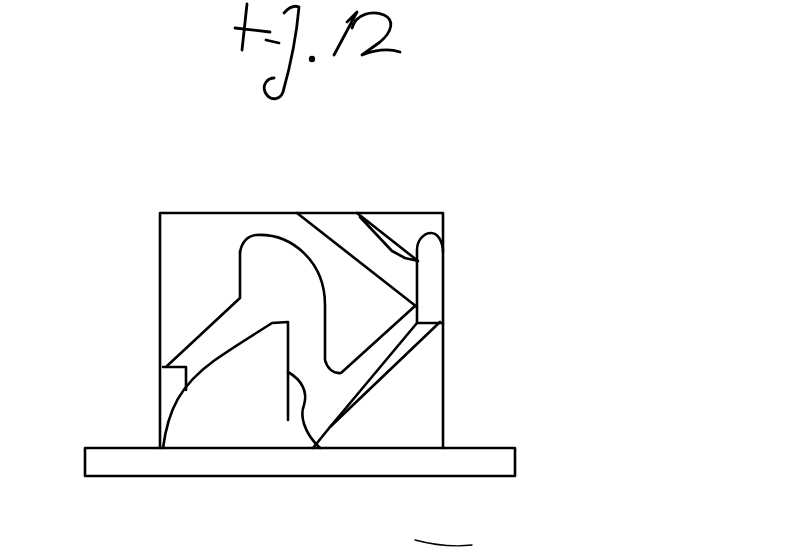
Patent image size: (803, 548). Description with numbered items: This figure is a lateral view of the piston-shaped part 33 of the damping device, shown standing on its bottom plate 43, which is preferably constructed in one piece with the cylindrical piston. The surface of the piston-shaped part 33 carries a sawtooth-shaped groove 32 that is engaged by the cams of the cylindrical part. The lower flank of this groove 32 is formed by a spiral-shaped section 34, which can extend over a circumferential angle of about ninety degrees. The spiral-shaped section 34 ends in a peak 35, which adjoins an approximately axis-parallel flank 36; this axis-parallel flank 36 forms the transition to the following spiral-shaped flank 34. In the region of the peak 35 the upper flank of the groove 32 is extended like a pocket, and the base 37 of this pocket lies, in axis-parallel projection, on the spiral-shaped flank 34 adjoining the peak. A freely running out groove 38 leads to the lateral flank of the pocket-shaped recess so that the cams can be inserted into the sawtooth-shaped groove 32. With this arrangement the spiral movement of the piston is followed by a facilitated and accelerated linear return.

The piston-shaped part 33 is at (483, 218).
The bottom plate 43 is at (476, 462).
The peaks 35 is at (240, 252).
The base of the pockets 37 is at (253, 236).
The freely running out grooves 38 is at (354, 223).
The axis-parallel flanks 36 is at (288, 420).
The sawtooth-shaped grooves 32 is at (390, 358).
The spiral-shaped sections 34 is at (562, 402).